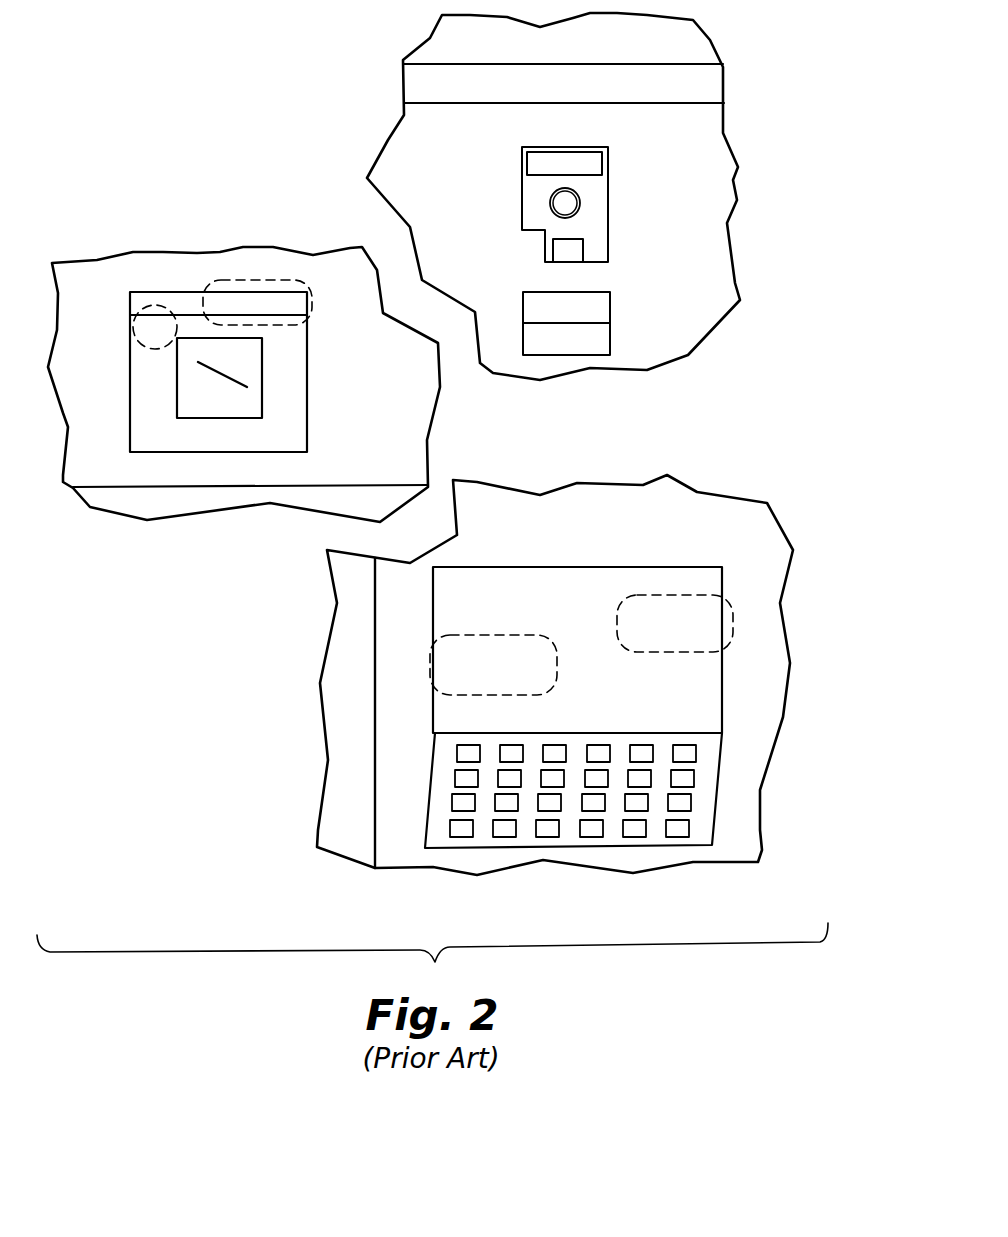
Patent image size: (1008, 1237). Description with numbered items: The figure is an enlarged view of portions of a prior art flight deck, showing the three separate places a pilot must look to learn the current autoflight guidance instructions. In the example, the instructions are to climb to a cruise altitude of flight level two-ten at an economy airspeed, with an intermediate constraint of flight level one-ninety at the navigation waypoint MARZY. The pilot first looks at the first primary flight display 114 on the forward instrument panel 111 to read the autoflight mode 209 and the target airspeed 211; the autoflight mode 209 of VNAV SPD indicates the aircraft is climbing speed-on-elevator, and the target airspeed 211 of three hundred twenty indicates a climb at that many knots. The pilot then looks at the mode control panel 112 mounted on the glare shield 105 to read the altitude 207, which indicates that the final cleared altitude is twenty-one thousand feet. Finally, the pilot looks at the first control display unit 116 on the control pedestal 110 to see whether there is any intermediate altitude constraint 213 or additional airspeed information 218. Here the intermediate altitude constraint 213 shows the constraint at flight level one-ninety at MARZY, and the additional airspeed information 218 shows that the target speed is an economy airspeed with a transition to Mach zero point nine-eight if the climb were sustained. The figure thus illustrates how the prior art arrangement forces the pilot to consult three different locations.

The glare shield 105 is at (680, 62).
The mode control panel 112 is at (447, 123).
The altitude 207 is at (523, 163).
The forward instrument panel 111 is at (403, 437).
The first primary flight display 114 is at (307, 360).
The autoflight mode 209 is at (235, 280).
The target airspeed 211 is at (153, 348).
The control pedestal 110 is at (403, 850).
The first control display unit 116 is at (723, 703).
The intermediate altitude constraint 213 is at (680, 593).
The additional airspeed information 218 is at (475, 635).